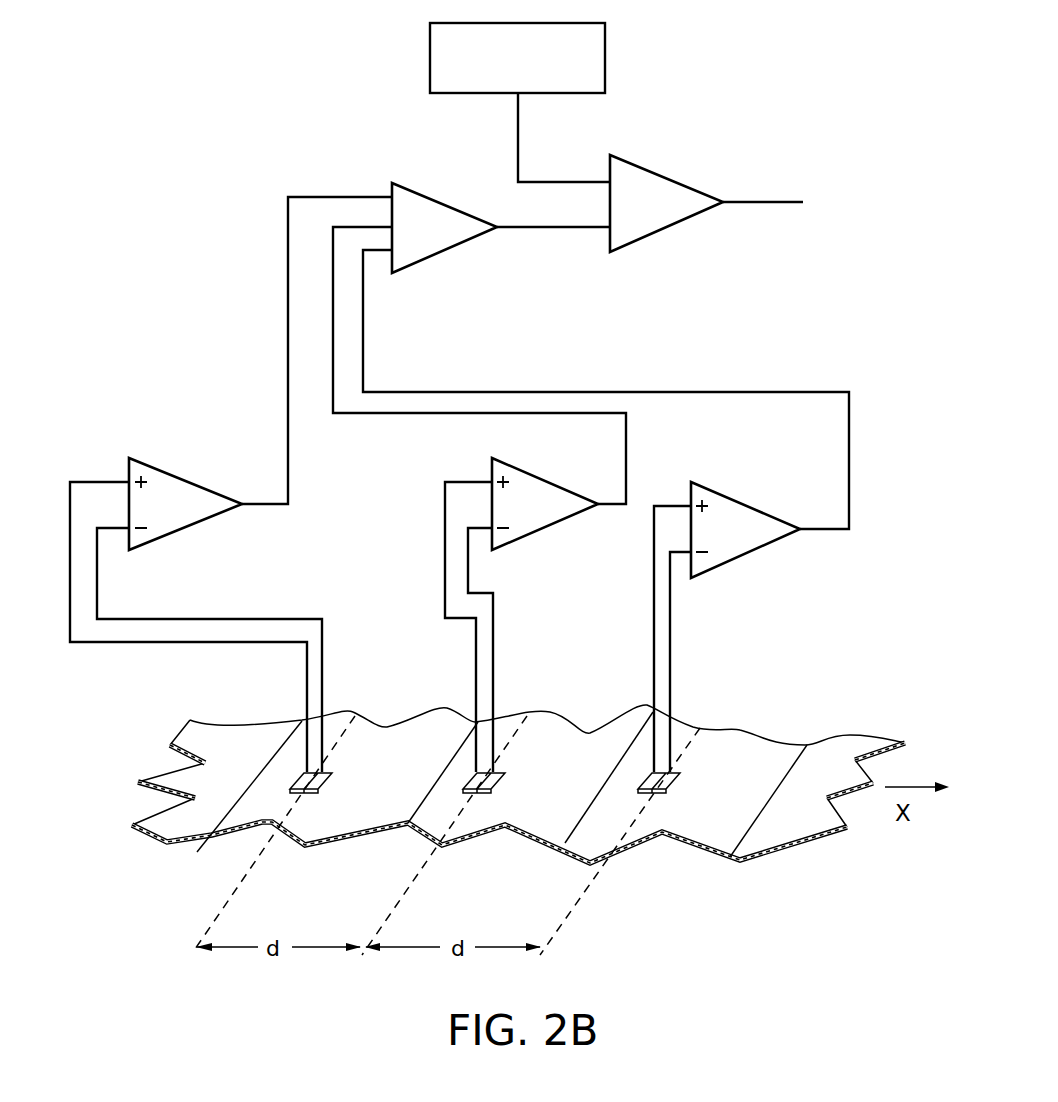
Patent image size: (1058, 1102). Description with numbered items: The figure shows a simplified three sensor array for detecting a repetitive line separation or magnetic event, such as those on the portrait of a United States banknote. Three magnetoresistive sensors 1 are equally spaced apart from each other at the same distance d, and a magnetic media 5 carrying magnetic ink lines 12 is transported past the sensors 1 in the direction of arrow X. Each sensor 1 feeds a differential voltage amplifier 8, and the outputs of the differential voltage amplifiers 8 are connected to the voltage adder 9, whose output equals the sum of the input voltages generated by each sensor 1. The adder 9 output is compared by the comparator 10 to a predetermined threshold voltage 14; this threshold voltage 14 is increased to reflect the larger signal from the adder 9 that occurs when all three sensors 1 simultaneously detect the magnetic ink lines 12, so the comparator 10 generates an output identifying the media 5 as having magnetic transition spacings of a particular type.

The magnetoresistive sensor 1 is at (327, 780).
The magnetic media 5 is at (235, 736).
The differential voltage amplifier 8 is at (177, 477).
The voltage adder 9 is at (427, 198).
The comparator 10 is at (660, 176).
The magnetic ink lines 12 is at (245, 815).
The threshold voltage 14 is at (605, 43).